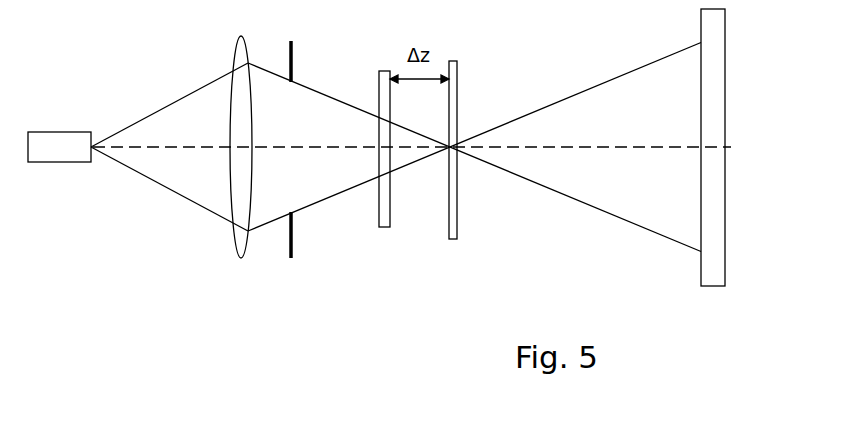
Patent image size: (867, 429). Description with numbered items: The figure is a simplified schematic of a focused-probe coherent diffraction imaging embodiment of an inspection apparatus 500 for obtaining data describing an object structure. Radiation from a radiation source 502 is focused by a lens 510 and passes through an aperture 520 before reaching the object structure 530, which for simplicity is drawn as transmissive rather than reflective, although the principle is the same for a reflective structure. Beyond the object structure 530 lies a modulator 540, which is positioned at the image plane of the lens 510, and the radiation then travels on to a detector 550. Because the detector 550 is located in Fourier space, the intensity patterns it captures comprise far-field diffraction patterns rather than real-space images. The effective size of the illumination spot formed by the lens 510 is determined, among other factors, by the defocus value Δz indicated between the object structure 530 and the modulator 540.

The inspection apparatus 500 is at (126, 334).
The radiation source 502 is at (59, 147).
The lens 510 is at (242, 166).
The aperture 520 is at (292, 169).
The object structure 530 is at (386, 165).
The modulator 540 is at (453, 165).
The detector 550 is at (713, 161).